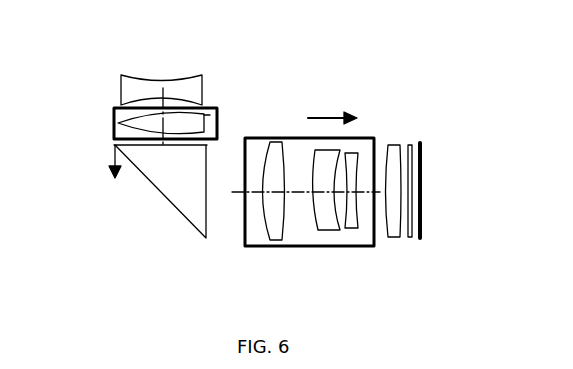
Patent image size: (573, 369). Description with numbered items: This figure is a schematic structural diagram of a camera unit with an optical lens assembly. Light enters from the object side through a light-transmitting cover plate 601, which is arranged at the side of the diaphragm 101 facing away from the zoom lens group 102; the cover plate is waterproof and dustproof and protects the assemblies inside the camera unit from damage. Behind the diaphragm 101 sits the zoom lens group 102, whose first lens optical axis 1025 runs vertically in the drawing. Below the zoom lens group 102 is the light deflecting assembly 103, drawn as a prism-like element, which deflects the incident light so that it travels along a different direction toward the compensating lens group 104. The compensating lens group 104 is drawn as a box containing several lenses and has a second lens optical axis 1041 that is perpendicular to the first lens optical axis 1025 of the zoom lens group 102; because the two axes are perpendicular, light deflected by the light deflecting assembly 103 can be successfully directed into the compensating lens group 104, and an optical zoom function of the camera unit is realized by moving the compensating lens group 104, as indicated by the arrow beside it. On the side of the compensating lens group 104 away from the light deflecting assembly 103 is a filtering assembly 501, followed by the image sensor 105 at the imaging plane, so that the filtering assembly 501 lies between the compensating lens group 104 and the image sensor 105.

The light-transmitting cover plate 601 is at (152, 85).
The diaphragm 101 is at (114, 110).
The zoom lens group 102 is at (118, 123).
The first lens optical axis 1025 is at (168, 123).
The light deflecting assembly 103 is at (187, 202).
The compensating lens group 104 is at (288, 148).
The second lens optical axis 1041 is at (297, 192).
The filtering assembly 501 is at (411, 148).
The image sensor 105 is at (423, 165).